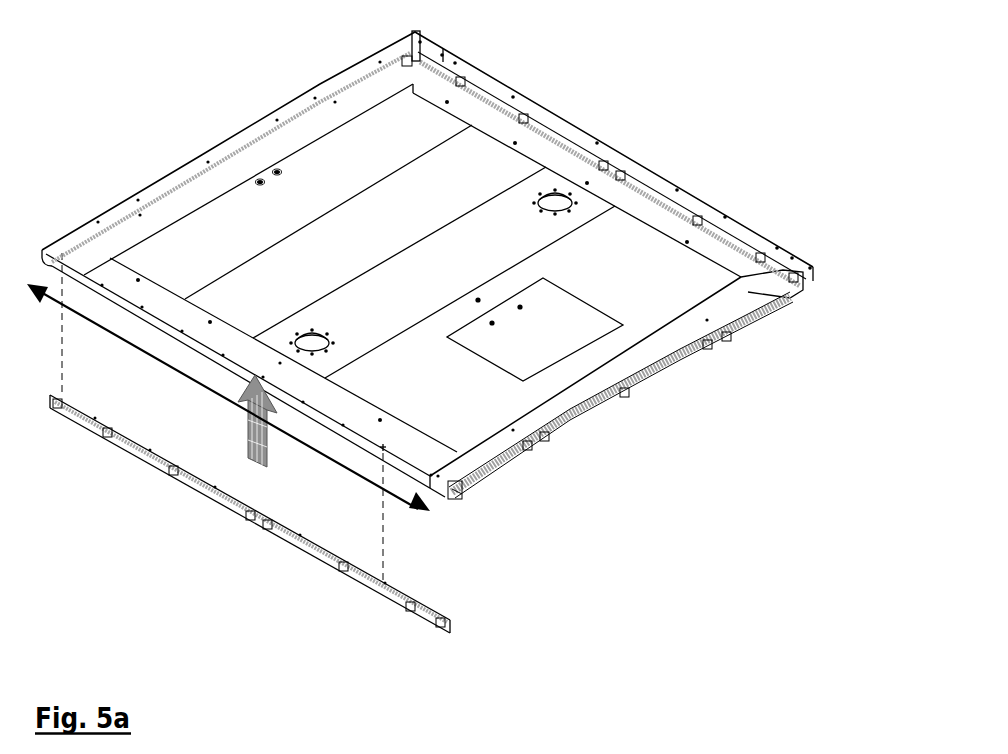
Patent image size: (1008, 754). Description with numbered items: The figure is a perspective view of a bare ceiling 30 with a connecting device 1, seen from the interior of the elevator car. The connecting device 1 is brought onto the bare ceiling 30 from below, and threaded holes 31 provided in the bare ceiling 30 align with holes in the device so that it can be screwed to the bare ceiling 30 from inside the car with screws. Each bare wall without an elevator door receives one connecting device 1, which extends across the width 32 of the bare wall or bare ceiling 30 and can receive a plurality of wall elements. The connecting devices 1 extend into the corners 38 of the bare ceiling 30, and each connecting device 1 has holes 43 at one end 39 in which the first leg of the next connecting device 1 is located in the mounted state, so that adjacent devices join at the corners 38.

The connecting device 1 is at (623, 177).
The bare ceiling 30 is at (490, 390).
The threaded holes 31 is at (465, 483).
The width 32 is at (400, 456).
The corners 38 is at (398, 53).
The end 39 is at (510, 517).
The holes 43 is at (470, 513).